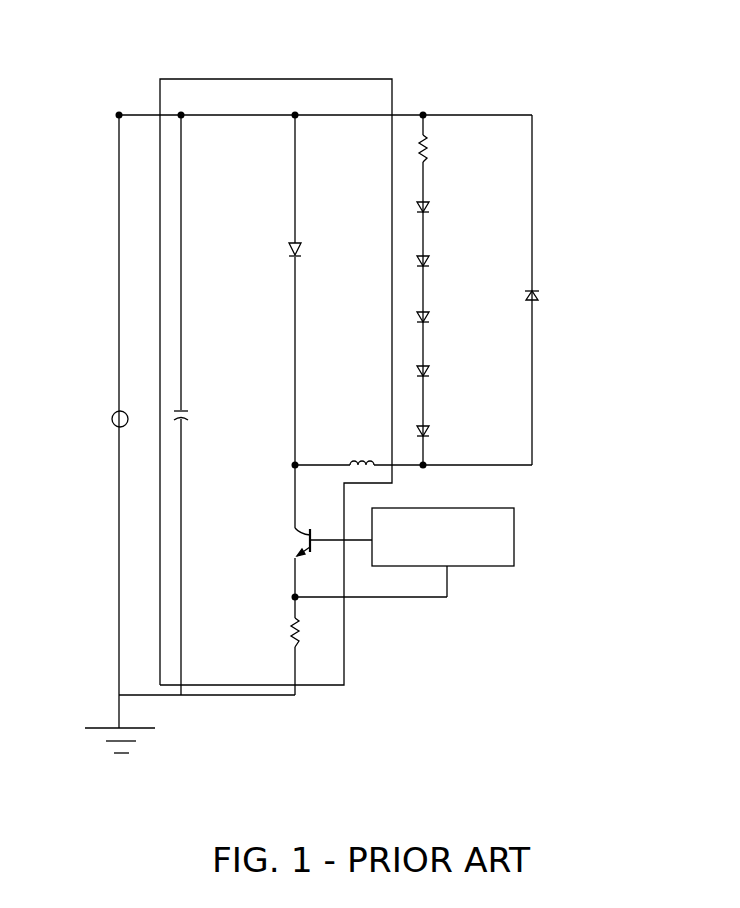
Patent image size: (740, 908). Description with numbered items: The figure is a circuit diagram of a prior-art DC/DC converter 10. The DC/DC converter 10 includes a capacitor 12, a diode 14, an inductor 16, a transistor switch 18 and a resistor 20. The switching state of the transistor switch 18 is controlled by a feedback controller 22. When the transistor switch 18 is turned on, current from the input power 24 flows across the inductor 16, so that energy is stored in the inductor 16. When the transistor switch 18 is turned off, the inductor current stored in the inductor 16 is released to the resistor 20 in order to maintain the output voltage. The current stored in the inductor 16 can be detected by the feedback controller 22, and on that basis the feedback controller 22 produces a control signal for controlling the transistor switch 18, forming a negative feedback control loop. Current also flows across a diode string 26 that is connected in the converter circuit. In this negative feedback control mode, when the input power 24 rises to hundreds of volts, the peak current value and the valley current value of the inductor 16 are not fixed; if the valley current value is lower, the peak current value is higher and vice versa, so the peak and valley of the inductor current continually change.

The DC/DC converter 10 is at (392, 102).
The capacitor 12 is at (185, 413).
The diode 14 is at (302, 252).
The inductor 16 is at (352, 462).
The transistor switch 18 is at (300, 531).
The resistor 20 is at (290, 632).
The feedback controller 22 is at (514, 540).
The input power 24 is at (112, 424).
The diode string 26 is at (448, 244).